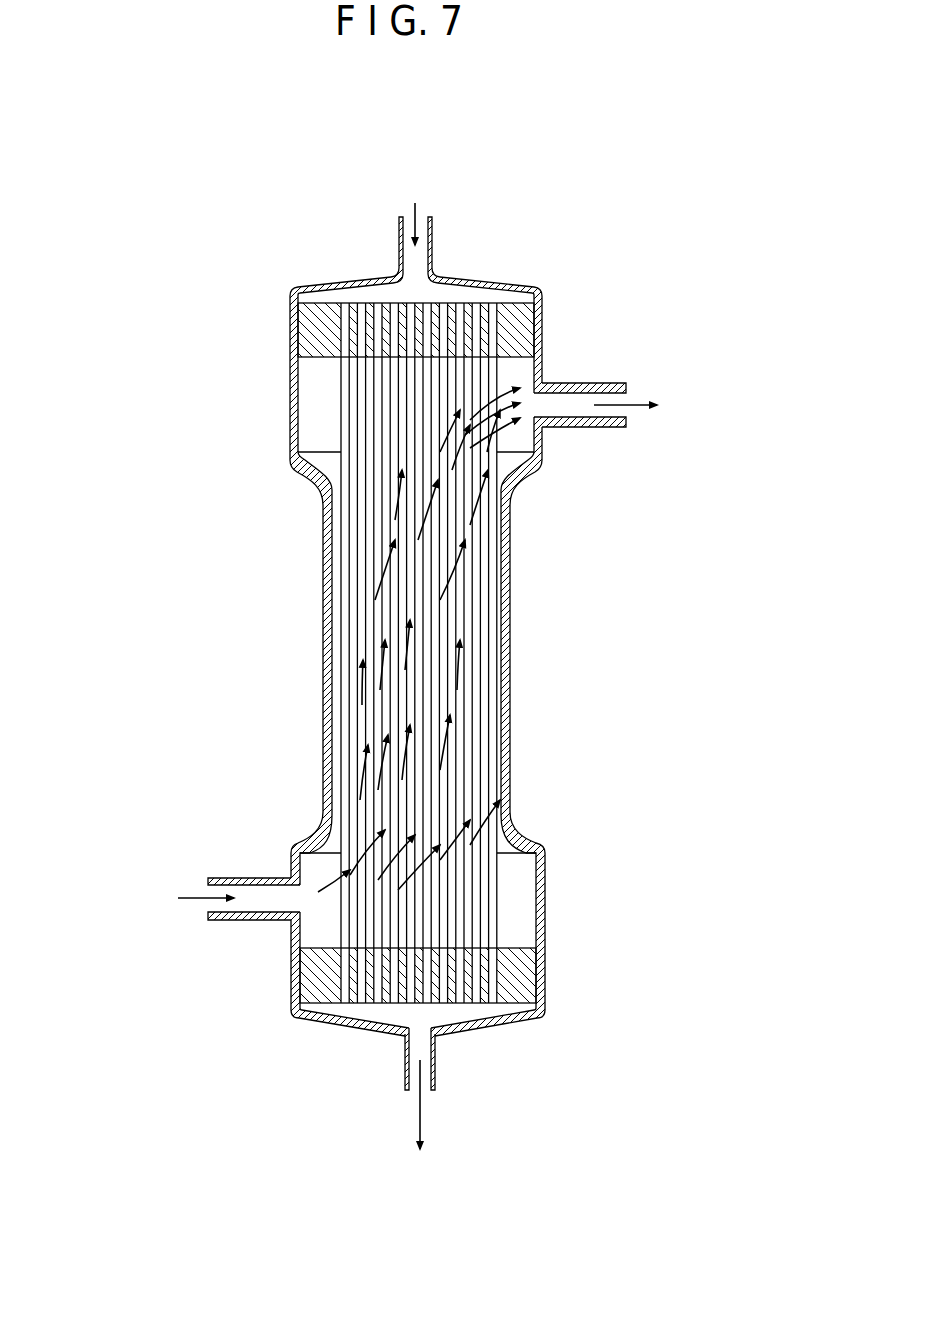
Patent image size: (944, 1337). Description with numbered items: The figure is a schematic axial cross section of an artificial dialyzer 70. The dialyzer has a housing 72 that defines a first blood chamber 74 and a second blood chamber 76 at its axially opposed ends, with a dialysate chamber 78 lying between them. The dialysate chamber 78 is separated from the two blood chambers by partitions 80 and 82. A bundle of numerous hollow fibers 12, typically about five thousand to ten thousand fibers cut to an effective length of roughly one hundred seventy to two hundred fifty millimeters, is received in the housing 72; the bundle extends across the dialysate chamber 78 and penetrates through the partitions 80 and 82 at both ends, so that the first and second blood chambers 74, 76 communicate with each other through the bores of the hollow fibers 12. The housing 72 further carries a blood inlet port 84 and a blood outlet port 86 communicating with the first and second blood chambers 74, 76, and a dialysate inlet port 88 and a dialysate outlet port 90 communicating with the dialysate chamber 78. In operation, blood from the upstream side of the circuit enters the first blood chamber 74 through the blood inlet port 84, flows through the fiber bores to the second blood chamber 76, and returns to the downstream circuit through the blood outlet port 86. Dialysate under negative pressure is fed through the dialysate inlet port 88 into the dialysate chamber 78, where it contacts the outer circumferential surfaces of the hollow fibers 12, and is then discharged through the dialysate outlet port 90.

The artificial dialyzer 70 is at (246, 330).
The housing 72 is at (323, 580).
The first blood chamber 74 is at (368, 293).
The second blood chamber 76 is at (490, 1013).
The dialysate chamber 78 is at (310, 423).
The partition 80 is at (517, 318).
The partition 82 is at (522, 968).
The blood inlet port 84 is at (433, 228).
The blood outlet port 86 is at (432, 1062).
The dialysate inlet port 88 is at (240, 922).
The dialysate outlet port 90 is at (588, 427).
The hollow fibers 12 is at (481, 688).